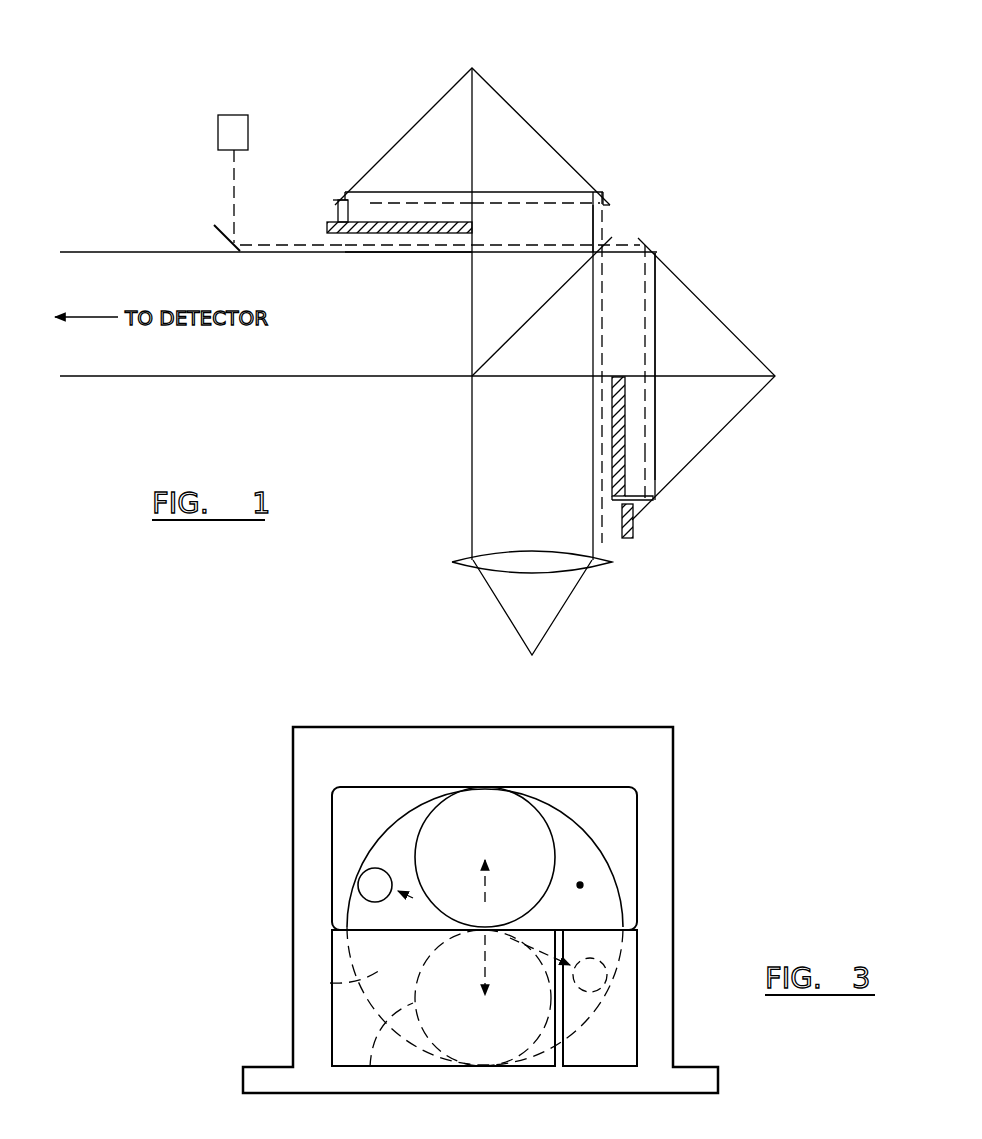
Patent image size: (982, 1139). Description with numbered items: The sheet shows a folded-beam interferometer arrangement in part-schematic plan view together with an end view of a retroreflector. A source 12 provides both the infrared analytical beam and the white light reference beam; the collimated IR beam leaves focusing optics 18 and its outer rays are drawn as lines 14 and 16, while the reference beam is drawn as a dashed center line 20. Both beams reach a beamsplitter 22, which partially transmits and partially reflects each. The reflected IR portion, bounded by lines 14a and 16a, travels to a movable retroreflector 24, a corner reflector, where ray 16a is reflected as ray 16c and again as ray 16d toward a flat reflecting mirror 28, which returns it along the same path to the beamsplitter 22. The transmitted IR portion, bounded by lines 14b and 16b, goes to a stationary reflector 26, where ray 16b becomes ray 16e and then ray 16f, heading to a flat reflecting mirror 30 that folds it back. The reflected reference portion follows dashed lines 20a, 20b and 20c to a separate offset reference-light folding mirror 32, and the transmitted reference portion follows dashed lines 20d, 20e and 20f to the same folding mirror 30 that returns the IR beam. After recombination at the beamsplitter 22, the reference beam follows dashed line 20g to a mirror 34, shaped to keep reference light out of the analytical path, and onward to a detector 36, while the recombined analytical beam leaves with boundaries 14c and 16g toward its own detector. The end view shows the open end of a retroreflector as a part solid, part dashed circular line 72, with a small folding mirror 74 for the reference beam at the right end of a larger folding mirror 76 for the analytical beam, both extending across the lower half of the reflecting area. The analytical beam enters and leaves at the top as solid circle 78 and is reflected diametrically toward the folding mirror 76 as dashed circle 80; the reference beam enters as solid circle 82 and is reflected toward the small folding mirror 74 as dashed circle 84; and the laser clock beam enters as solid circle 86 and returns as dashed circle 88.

In FIG. 1, the source 12 is at (515, 657).
In FIG. 1, the outer ray of collimated IR beam 14 is at (472, 507).
In FIG. 1, the outer line of reflected IR beam 14a is at (497, 378).
In FIG. 1, the outer line of transmitted IR beam 14b is at (472, 333).
In FIG. 1, the boundary of recombined analytical beam 14c is at (207, 377).
In FIG. 1, the outer ray of collimated IR beam 16 is at (593, 420).
In FIG. 1, the ray reflected by beamsplitter 16a is at (620, 252).
In FIG. 1, the ray transmitted by beamsplitter 16b is at (593, 220).
In FIG. 1, the ray reflected by movable retroreflector 16c is at (655, 317).
In FIG. 1, the ray directed toward flat mirror 16d is at (632, 500).
In FIG. 1, the ray reflected by stationary retroreflector 16e is at (522, 190).
In FIG. 1, the ray directed toward flat mirror 16f is at (352, 214).
In FIG. 1, the boundary of recombined analytical beam 16g is at (368, 255).
In FIG. 1, the focusing optics 18 is at (517, 565).
In FIG. 1, the white light reference beam 20 is at (602, 543).
In FIG. 1, the reflected portion of reference beam 20a is at (638, 243).
In FIG. 1, the reference beam path within retroreflector 20b is at (645, 340).
In FIG. 1, the reference beam path toward offset folding mirror 20c is at (636, 510).
In FIG. 1, the transmitted portion of reference beam 20d is at (605, 213).
In FIG. 1, the reference beam path within stationary retroreflector 20e is at (417, 200).
In FIG. 1, the reference beam path toward folding mirror 20f is at (333, 208).
In FIG. 1, the recombined reference beam path 20g is at (438, 247).
In FIG. 1, the beamsplitter 22 is at (624, 222).
In FIG. 1, the movable retroreflector 24 is at (758, 356).
In FIG. 1, the stationary reflector 26 is at (516, 102).
In FIG. 1, the flat reflecting mirror 28 is at (633, 437).
In FIG. 1, the flat reflecting mirror 30 is at (387, 222).
In FIG. 1, the reference-light folding mirror 32 is at (647, 537).
In FIG. 1, the mirror 34 is at (217, 230).
In FIG. 1, the detector 36 is at (218, 132).
In FIG. 3, the open end of retroreflector 72 is at (588, 843).
In FIG. 3, the small folding mirror 74 is at (625, 1013).
In FIG. 3, the larger folding mirror 76 is at (348, 1053).
In FIG. 3, the solid circular line 78 is at (537, 817).
In FIG. 3, the dashed circular line 80 is at (454, 1010).
In FIG. 3, the solid circular line 82 is at (358, 888).
In FIG. 3, the dashed circular line 84 is at (604, 962).
In FIG. 3, the entering beam solid circular line 86 is at (580, 885).
In FIG. 3, the reflected beam dashed circular line 88 is at (330, 982).